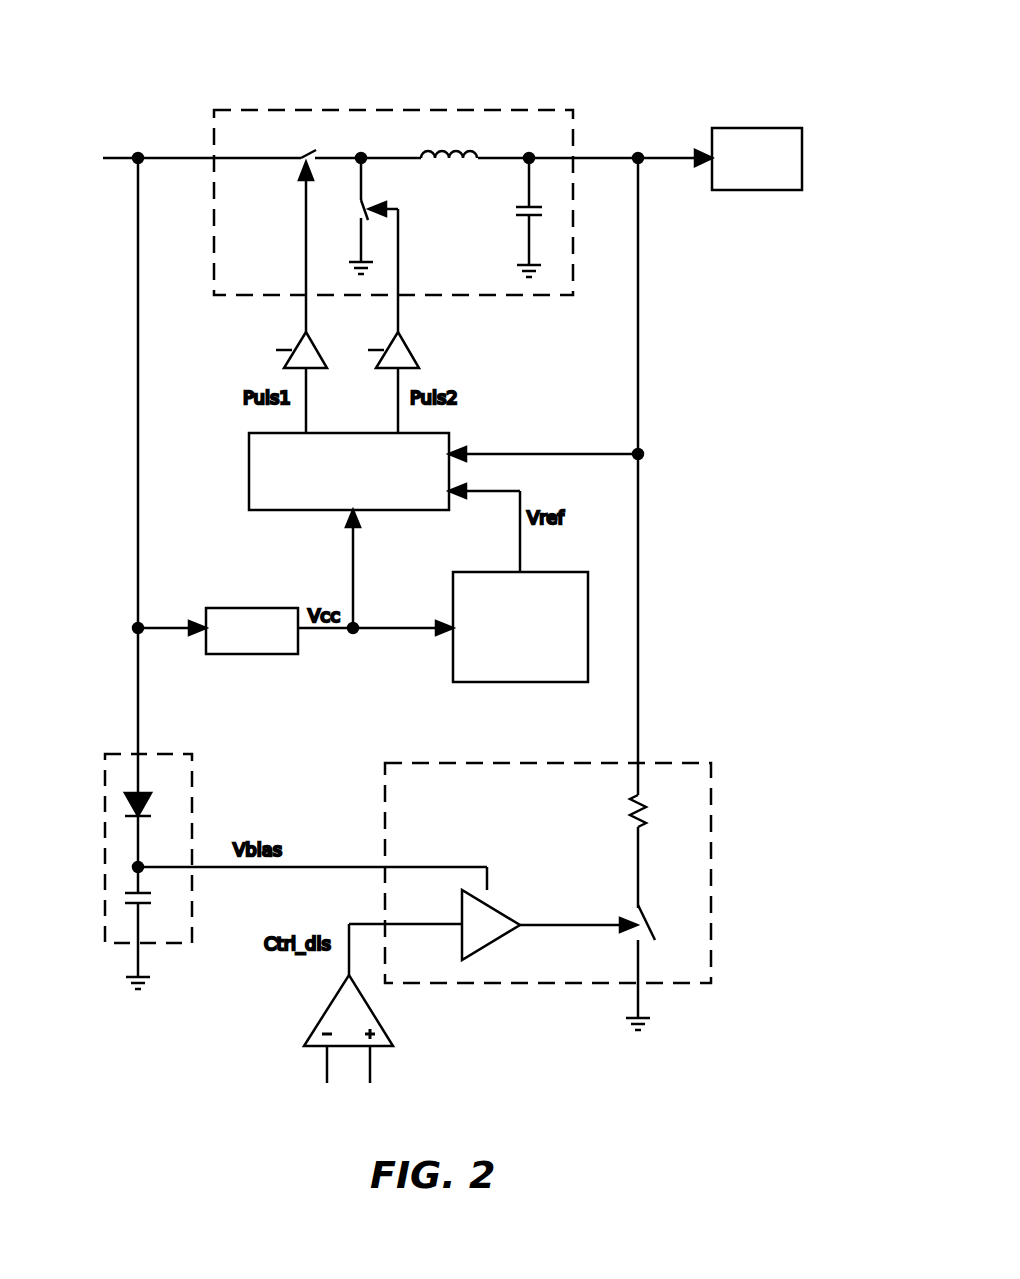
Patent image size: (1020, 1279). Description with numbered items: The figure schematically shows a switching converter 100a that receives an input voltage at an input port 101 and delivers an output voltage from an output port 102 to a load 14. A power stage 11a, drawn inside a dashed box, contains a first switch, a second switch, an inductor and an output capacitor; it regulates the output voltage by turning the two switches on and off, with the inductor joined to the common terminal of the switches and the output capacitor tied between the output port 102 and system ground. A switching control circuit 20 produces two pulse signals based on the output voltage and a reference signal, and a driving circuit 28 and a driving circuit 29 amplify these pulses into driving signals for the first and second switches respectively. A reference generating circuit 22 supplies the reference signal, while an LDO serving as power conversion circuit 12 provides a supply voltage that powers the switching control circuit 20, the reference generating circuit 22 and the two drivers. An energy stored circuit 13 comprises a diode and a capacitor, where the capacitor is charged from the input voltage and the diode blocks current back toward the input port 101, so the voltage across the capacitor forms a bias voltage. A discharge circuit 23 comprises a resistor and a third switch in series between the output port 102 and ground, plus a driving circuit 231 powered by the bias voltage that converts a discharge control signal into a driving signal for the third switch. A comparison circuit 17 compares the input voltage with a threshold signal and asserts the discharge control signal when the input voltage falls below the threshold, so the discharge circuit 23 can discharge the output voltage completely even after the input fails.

The switching converter 100a is at (731, 49).
The input port 101 is at (122, 141).
The output port 102 is at (633, 131).
The power stage 11a is at (530, 120).
The power conversion circuit 12 is at (270, 608).
The energy stored circuit 13 is at (155, 756).
The load 14 is at (727, 190).
The comparison circuit 17 is at (384, 1036).
The switching control circuit 20 is at (249, 466).
The reference generating circuit 22 is at (588, 572).
The discharge circuit 23 is at (548, 874).
The driving circuit 231 is at (508, 936).
The driving circuit 28 is at (311, 348).
The driving circuit 29 is at (404, 348).